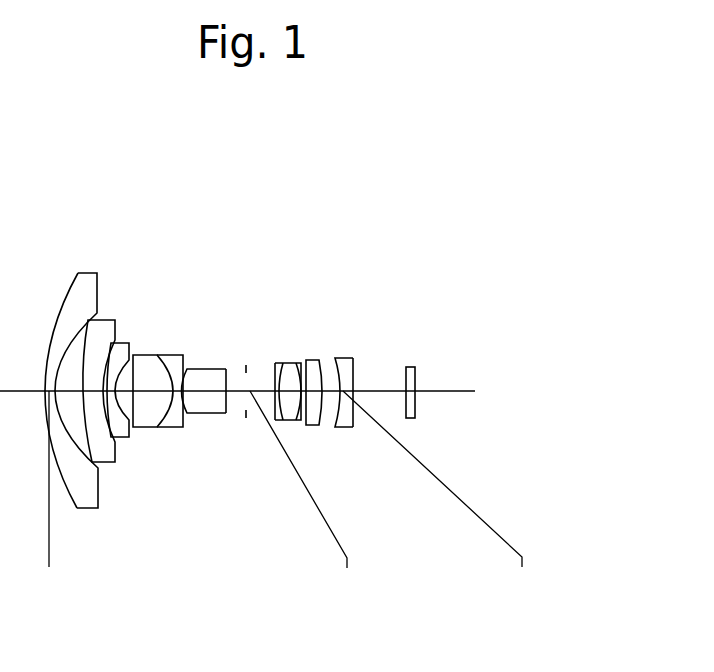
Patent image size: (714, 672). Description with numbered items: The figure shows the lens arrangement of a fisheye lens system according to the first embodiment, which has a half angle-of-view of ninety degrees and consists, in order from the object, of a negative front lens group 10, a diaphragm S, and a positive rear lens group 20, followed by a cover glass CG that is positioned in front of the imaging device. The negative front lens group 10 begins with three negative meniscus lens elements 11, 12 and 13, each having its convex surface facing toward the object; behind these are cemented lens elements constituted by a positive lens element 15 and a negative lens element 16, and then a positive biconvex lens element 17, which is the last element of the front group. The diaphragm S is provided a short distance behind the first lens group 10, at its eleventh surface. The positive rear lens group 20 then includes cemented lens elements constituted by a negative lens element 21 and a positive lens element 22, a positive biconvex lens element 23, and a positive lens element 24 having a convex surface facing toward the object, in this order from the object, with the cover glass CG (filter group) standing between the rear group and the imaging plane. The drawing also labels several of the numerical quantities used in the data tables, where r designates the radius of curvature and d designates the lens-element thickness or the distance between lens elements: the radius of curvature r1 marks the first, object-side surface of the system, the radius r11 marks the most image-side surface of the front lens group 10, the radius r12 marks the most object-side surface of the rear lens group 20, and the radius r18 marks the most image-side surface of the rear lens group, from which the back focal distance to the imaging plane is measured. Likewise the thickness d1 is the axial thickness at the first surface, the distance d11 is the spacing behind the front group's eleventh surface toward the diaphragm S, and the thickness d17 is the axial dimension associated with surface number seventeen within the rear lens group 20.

The negative front lens group 10 is at (372, 165).
The positive rear lens group 20 is at (572, 192).
The negative meniscus lens element 11 is at (84, 366).
The negative meniscus lens element 12 is at (105, 452).
The negative meniscus lens element 13 is at (120, 432).
The positive lens element 15 is at (145, 367).
The negative lens element 16 is at (177, 363).
The positive biconvex lens element 17 is at (274, 289).
The diaphragm S is at (245, 412).
The negative lens element 21 is at (338, 330).
The positive lens element 22 is at (292, 372).
The positive biconvex lens element 23 is at (315, 367).
The positive lens element 24 is at (453, 312).
The cover glass CG is at (410, 373).
The radius of curvature of the first surface r1 is at (77, 272).
The radius of curvature of surface No. 11 r11 is at (226, 369).
The radius of curvature of surface No. 12 r12 is at (275, 363).
The radius of curvature of surface No. 18 r18 is at (353, 358).
The lens-element thickness at the first surface d1 is at (47, 494).
The distance at surface No. 11 d11 is at (314, 494).
The lens-element thickness at surface No. 17 d17 is at (449, 494).